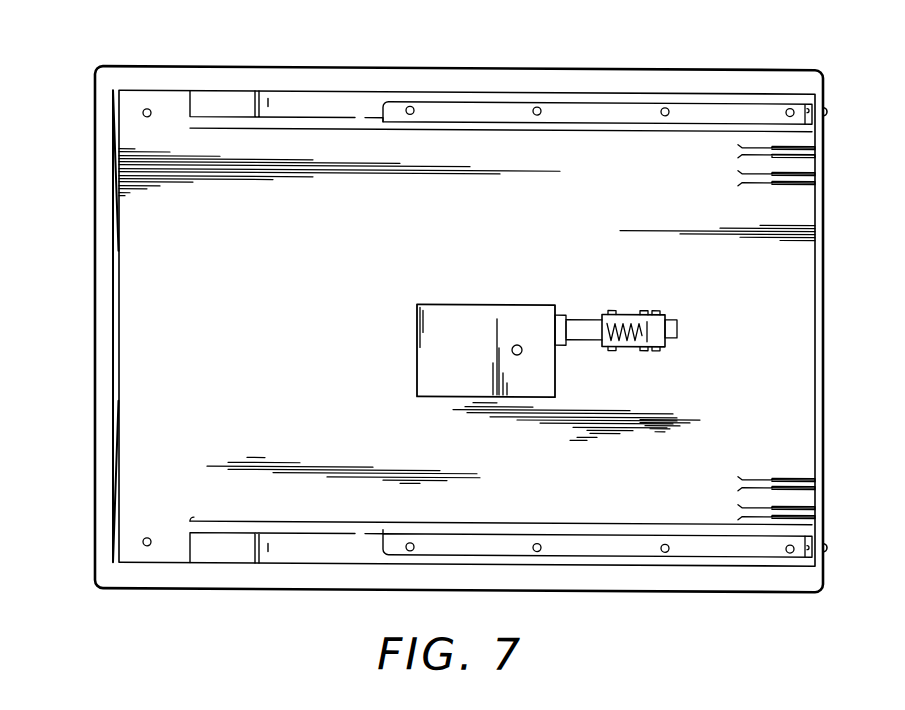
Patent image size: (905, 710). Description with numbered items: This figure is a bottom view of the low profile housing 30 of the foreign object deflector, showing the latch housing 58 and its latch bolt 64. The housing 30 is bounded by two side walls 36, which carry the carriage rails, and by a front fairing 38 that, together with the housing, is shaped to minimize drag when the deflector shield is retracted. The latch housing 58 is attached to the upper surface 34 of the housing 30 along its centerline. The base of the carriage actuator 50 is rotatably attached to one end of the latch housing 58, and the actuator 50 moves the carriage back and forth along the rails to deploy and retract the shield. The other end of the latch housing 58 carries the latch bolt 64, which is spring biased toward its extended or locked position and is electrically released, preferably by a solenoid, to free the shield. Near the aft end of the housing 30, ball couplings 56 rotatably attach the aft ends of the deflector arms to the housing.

The low profile housing 30 is at (278, 588).
The upper surface 34 is at (245, 345).
The side walls 36 is at (532, 65).
The front fairing 38 is at (95, 360).
The carriage actuator 50 is at (493, 302).
The ball couplings 56 is at (786, 475).
The latch housing 58 is at (628, 311).
The latch bolt 64 is at (677, 331).